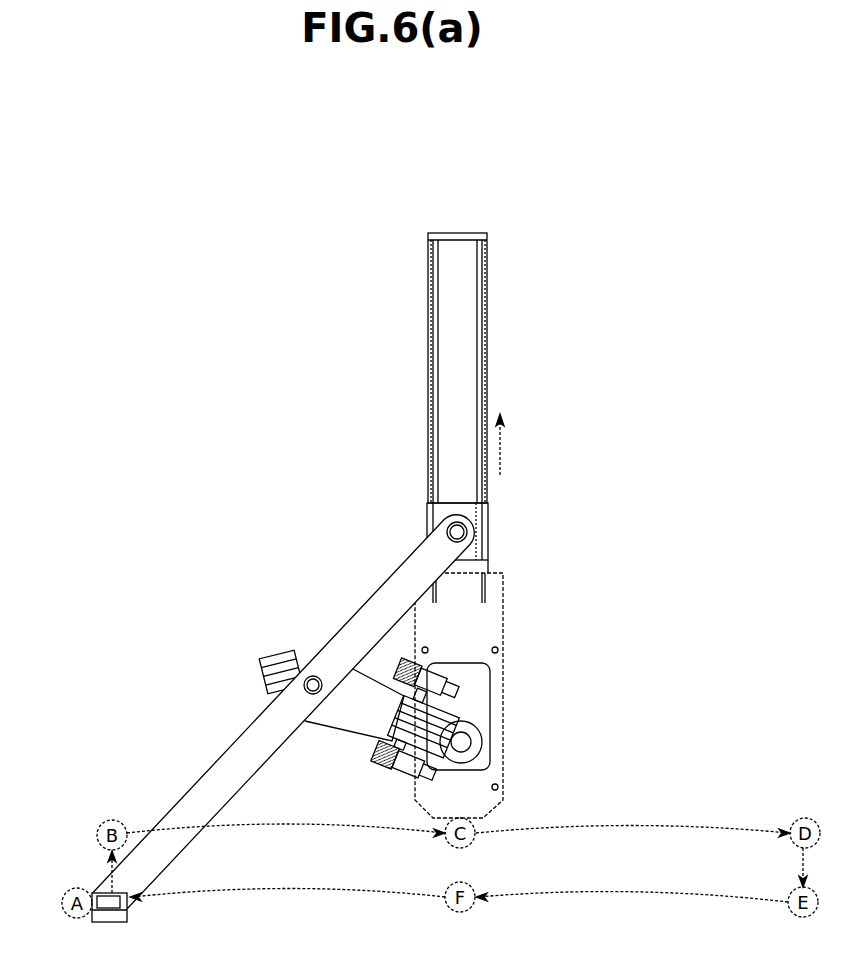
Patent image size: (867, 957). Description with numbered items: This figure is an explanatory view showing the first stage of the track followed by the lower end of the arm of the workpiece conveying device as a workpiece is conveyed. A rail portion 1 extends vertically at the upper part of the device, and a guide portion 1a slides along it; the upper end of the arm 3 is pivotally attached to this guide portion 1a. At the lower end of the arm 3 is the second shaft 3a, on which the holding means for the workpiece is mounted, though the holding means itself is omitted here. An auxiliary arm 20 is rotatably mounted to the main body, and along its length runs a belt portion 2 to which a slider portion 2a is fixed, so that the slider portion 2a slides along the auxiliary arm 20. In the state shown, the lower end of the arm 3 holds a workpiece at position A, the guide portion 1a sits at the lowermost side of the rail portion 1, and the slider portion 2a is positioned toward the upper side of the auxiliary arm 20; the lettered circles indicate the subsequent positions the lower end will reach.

The rail portion 1 is at (490, 370).
The guide portion 1a is at (488, 524).
The belt portion 2 is at (283, 655).
The slider portion 2a is at (350, 723).
The arm 3 is at (363, 598).
The second shaft 3a is at (93, 921).
The auxiliary arm 20 is at (377, 731).